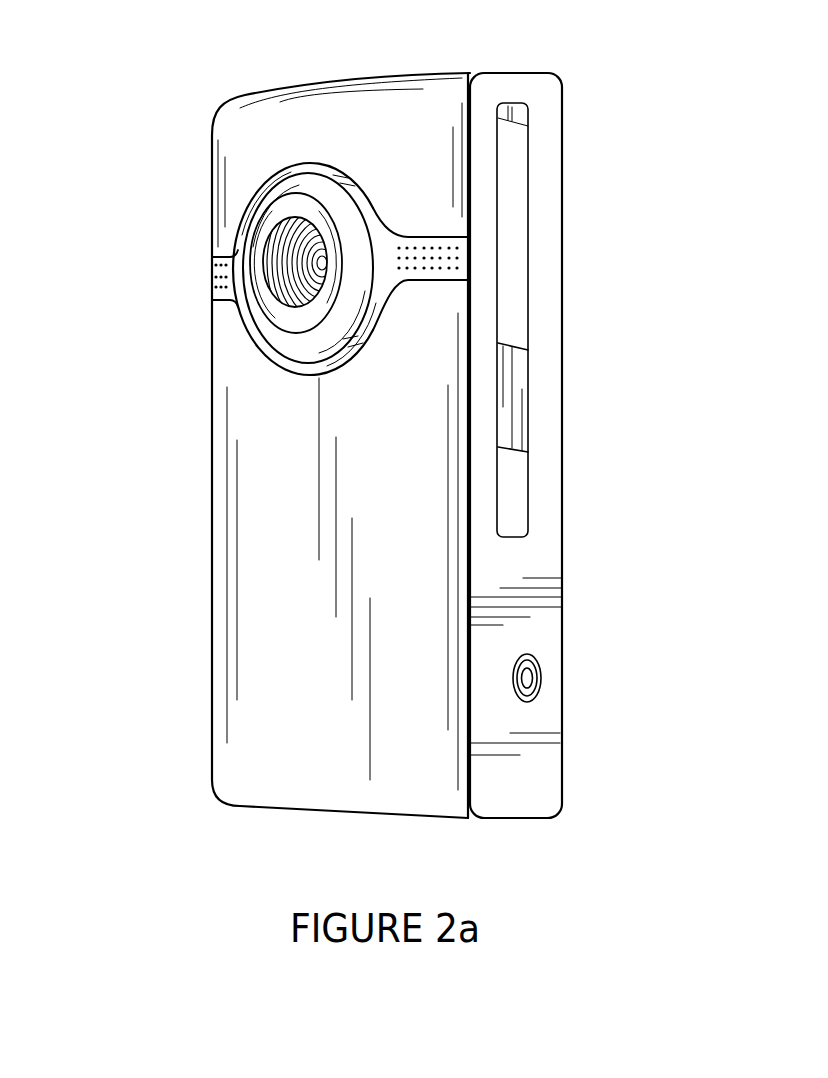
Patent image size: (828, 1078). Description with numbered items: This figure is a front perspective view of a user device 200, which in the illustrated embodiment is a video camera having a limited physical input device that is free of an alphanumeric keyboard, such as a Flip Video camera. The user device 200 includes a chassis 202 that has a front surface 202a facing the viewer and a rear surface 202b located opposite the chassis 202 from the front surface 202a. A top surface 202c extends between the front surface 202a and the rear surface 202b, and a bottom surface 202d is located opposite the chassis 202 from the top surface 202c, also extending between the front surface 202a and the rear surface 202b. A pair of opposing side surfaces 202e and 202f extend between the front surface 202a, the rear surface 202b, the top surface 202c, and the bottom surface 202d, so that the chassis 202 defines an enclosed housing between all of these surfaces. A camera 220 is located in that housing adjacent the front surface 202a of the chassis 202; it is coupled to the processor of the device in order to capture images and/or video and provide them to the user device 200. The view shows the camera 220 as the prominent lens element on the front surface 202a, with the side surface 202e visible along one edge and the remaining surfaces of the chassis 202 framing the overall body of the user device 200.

The user device 200 is at (131, 92).
The chassis 202 is at (547, 92).
The front surface 202a is at (286, 471).
The rear surface 202b is at (562, 307).
The top surface 202c is at (363, 75).
The bottom surface 202d is at (317, 810).
The side surface 202e is at (543, 563).
The side surface 202f is at (212, 511).
The camera 220 is at (323, 263).